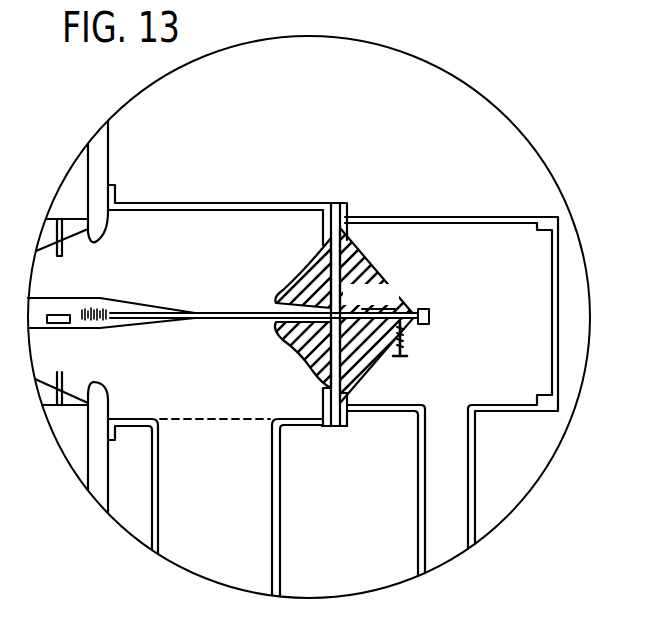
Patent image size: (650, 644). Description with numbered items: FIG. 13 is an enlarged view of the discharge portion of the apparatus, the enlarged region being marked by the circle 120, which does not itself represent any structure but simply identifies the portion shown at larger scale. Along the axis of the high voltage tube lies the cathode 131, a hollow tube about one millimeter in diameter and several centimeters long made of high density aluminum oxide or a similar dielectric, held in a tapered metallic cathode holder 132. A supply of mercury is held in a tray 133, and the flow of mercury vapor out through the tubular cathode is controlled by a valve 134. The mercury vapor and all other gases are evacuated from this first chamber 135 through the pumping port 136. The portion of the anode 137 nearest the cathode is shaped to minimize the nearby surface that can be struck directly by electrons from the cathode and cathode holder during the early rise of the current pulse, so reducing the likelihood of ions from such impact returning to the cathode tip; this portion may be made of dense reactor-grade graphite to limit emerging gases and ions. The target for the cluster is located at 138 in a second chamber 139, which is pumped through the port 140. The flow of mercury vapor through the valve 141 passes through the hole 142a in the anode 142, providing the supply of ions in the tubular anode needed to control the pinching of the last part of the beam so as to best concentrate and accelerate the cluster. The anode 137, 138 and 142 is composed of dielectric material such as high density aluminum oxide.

The circle 120 is at (425, 61).
The cathode 131 is at (210, 313).
The tapered metallic cathode holder 132 is at (145, 306).
The tray 133 is at (62, 323).
The valve 134 is at (115, 268).
The first chamber 135 is at (271, 394).
The pumping port 136 is at (271, 432).
The anode portion nearest the cathode 137 is at (306, 283).
The target 138 is at (420, 310).
The second chamber 139 is at (557, 357).
The port 140 is at (434, 470).
The valve 141 is at (407, 352).
The anode 142 is at (378, 279).
The hole 142a is at (403, 309).